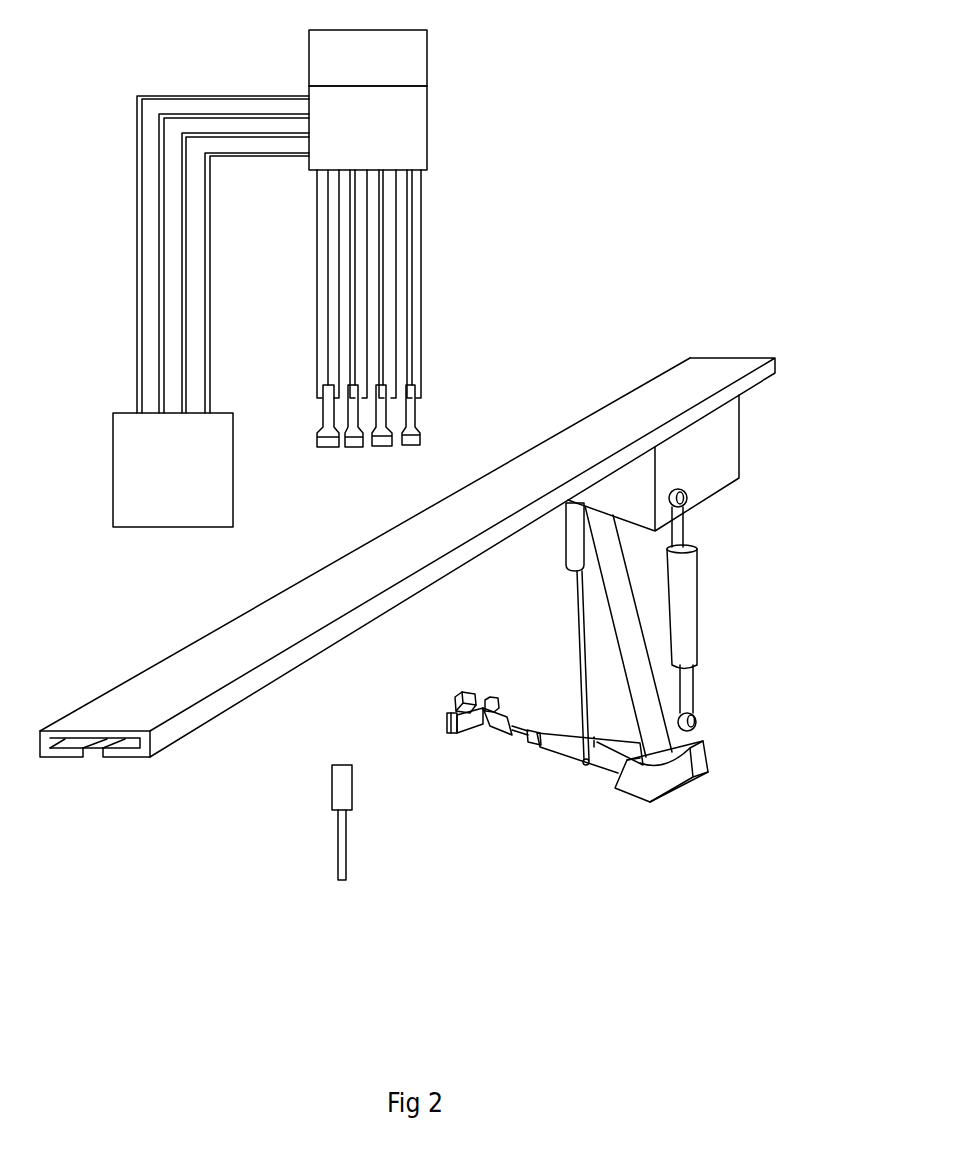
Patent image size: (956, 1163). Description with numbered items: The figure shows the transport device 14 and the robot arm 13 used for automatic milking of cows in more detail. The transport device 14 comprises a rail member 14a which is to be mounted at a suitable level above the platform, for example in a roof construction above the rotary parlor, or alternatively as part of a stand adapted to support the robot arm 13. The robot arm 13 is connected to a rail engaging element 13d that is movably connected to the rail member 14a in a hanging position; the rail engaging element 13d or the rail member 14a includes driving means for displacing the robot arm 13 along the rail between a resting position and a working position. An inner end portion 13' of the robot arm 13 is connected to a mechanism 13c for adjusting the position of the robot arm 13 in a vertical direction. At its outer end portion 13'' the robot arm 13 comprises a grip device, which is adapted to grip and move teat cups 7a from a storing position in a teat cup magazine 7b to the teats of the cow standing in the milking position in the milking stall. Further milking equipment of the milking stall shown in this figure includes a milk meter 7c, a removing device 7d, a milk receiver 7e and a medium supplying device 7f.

The teat cups 7a is at (412, 446).
The teat cup magazine 7b is at (428, 292).
The milk meter 7c is at (407, 138).
The removing device 7d is at (402, 75).
The milk receiver 7e is at (152, 463).
The medium supplying device 7f is at (338, 792).
The transport device 14 is at (407, 503).
The rail member 14a is at (222, 658).
The robot arm 13 is at (560, 676).
The inner end portion 13' is at (682, 795).
The outer end portion 13'' is at (455, 714).
The mechanism for adjusting the position of the robot arm in a vertical direction 13c is at (657, 637).
The rail engaging element 13d is at (718, 448).